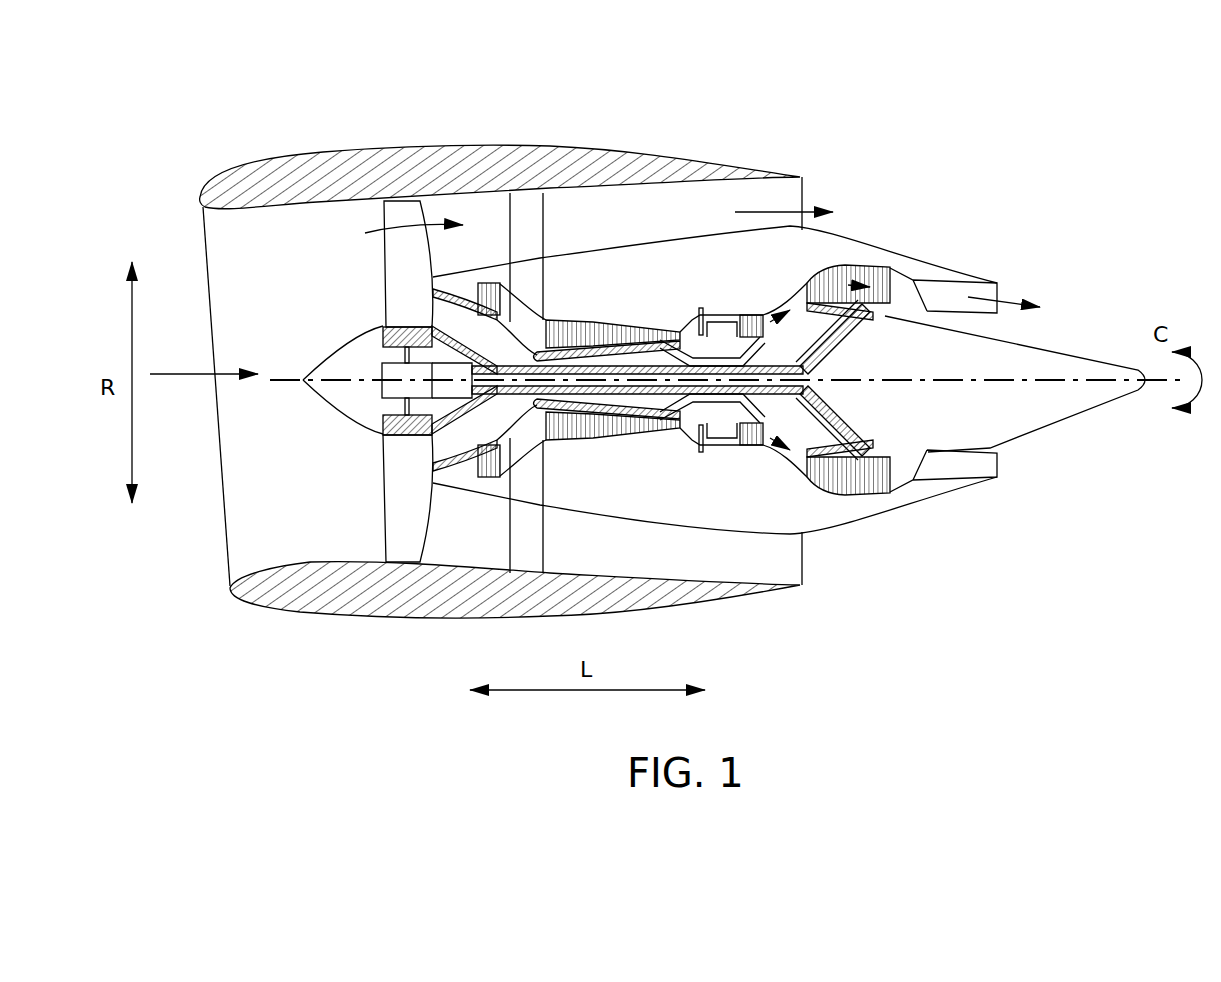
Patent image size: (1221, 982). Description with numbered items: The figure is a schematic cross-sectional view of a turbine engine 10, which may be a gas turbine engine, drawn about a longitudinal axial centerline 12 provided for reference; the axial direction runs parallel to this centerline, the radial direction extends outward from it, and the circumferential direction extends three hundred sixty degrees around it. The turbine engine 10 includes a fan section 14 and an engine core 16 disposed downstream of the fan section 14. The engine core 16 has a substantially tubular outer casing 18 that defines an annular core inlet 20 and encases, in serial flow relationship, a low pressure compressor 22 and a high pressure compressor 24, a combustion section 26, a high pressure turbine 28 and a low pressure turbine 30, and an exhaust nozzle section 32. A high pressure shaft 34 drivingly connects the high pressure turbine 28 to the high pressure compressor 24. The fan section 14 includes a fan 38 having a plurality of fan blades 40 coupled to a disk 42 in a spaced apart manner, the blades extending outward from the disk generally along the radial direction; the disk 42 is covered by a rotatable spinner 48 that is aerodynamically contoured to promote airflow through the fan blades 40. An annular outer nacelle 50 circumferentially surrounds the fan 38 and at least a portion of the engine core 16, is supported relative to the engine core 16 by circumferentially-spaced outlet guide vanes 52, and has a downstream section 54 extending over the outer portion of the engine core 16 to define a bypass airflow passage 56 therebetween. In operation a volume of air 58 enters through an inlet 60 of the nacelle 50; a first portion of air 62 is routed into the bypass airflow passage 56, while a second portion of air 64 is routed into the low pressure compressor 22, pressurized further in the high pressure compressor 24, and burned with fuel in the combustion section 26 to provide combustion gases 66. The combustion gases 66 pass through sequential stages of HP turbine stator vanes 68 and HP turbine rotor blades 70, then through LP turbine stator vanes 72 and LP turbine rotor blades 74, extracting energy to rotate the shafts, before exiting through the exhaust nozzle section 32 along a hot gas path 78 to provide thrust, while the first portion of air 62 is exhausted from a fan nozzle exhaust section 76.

The turbine engine 10 is at (930, 150).
The axial centerline 12 is at (942, 372).
The fan section 14 is at (345, 228).
The engine core 16 is at (653, 273).
The outer casing 18 is at (677, 525).
The annular core inlet 20 is at (478, 470).
The low pressure compressor 22 is at (500, 460).
The high pressure compressor 24 is at (565, 430).
The combustion section 26 is at (722, 433).
The high pressure turbine 28 is at (840, 440).
The low pressure turbine 30 is at (877, 488).
The exhaust nozzle section 32 is at (998, 283).
The high pressure shaft 34 is at (700, 353).
The fan 38 is at (305, 295).
The fan blades 40 is at (383, 512).
The disk 42 is at (385, 338).
The rotatable spinner 48 is at (318, 393).
The outer nacelle 50 is at (420, 622).
The outlet guide vanes 52 is at (545, 217).
The downstream section 54 is at (727, 165).
The bypass airflow passage 56 is at (705, 225).
The volume of air 58 is at (192, 372).
The inlet 60 is at (225, 568).
The first portion of air 62 is at (390, 232).
The second portion of air 64 is at (457, 287).
The combustion gases 66 is at (760, 325).
The HP turbine stator vanes 68 is at (733, 445).
The HP turbine rotor blades 70 is at (808, 377).
The LP turbine stator vanes 72 is at (817, 480).
The LP turbine rotor blades 74 is at (830, 497).
The fan nozzle exhaust section 76 is at (807, 193).
The hot gas path 78 is at (793, 300).